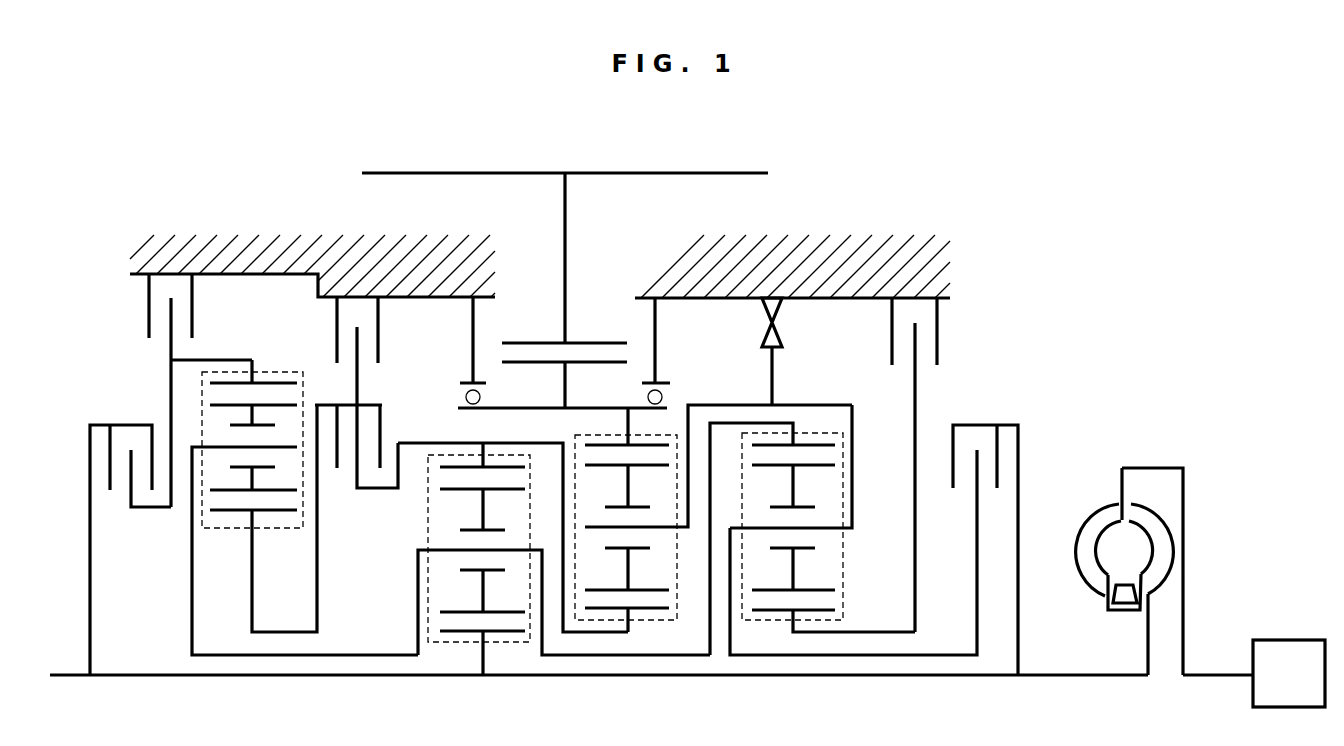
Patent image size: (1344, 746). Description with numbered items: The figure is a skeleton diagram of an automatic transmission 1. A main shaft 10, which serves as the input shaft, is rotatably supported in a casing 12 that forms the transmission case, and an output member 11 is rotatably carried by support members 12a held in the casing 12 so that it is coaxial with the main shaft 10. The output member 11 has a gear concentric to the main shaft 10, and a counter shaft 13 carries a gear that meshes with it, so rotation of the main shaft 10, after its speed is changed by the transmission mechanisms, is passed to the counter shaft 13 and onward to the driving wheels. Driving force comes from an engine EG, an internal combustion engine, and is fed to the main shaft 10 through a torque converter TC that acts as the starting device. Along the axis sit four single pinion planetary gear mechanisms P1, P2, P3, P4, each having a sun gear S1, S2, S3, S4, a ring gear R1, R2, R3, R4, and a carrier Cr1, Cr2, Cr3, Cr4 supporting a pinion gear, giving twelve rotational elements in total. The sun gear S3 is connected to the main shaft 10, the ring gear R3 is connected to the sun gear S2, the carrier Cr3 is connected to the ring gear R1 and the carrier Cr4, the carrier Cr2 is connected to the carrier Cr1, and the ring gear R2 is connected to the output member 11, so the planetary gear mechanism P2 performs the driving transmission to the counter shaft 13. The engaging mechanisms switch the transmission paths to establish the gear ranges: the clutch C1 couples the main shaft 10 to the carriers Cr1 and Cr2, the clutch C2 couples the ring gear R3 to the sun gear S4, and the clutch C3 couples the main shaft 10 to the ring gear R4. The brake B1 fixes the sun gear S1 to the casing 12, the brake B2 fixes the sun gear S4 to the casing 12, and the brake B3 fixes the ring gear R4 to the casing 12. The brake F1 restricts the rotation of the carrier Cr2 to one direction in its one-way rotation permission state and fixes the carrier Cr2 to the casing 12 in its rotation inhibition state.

The automatic transmission 1 is at (1095, 205).
The main shaft 10 is at (882, 677).
The output member 11 is at (568, 400).
The casing 12 is at (420, 240).
The support member 12a is at (471, 333).
The counter shaft 13 is at (505, 173).
The brake B1 is at (966, 323).
The brake B2 is at (312, 324).
The brake B3 is at (128, 315).
The clutch C1 is at (1045, 452).
The clutch C2 is at (398, 412).
The clutch C3 is at (131, 530).
The brake F1 is at (793, 336).
The ring gear R1 is at (835, 446).
The ring gear R2 is at (658, 443).
The ring gear R3 is at (461, 465).
The ring gear R4 is at (282, 383).
The planetary gear mechanism P1 is at (846, 570).
The planetary gear mechanism P2 is at (666, 622).
The planetary gear mechanism P3 is at (438, 644).
The planetary gear mechanism P4 is at (222, 530).
The sun gear S1 is at (834, 610).
The sun gear S2 is at (641, 613).
The sun gear S3 is at (509, 634).
The sun gear S4 is at (283, 512).
The carrier Cr1 is at (850, 530).
The carrier Cr2 is at (661, 528).
The carrier Cr3 is at (430, 550).
The carrier Cr4 is at (285, 447).
The torque converter TC is at (1082, 617).
The engine EG is at (1289, 673).